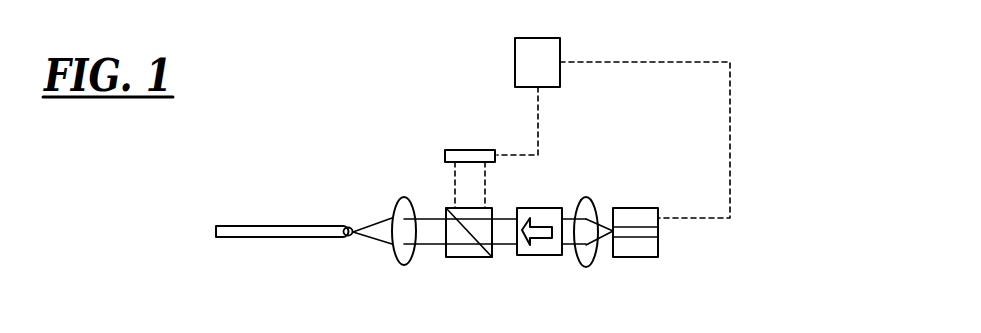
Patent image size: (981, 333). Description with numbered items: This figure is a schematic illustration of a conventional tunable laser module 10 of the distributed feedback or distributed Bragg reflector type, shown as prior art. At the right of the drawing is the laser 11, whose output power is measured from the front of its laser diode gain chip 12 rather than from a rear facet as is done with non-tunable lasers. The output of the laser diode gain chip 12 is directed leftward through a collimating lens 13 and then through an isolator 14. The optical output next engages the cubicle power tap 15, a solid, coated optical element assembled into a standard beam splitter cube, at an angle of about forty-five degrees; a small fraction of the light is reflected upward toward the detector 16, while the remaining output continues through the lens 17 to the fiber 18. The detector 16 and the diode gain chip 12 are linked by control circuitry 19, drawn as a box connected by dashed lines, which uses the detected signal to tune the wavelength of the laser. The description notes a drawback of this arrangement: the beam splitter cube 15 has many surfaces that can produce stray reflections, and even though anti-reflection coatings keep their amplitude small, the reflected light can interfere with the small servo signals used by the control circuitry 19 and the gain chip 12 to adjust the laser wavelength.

The tunable laser module 10 is at (398, 78).
The laser 11 is at (620, 268).
The laser diode gain chip 12 is at (641, 207).
The collimating lens 13 is at (596, 203).
The isolator 14 is at (542, 207).
The cubicle power tap 15 is at (472, 257).
The detector 16 is at (457, 150).
The lens 17 is at (395, 205).
The fiber 18 is at (239, 226).
The circuitry 19 is at (545, 38).